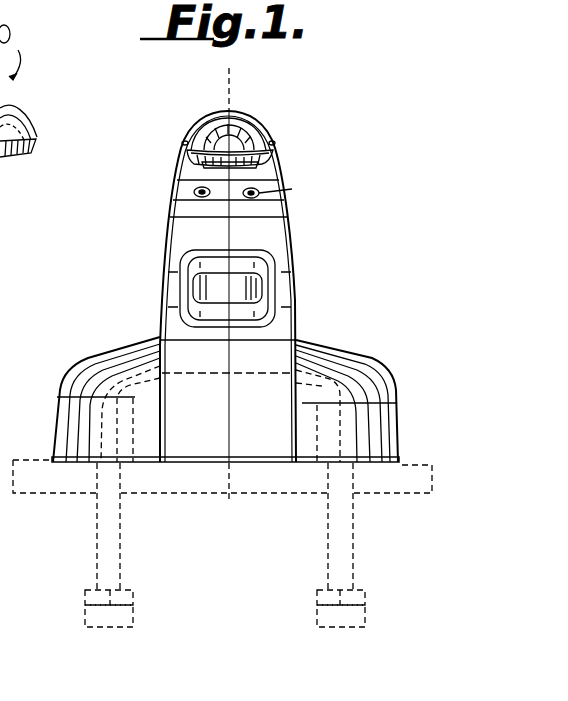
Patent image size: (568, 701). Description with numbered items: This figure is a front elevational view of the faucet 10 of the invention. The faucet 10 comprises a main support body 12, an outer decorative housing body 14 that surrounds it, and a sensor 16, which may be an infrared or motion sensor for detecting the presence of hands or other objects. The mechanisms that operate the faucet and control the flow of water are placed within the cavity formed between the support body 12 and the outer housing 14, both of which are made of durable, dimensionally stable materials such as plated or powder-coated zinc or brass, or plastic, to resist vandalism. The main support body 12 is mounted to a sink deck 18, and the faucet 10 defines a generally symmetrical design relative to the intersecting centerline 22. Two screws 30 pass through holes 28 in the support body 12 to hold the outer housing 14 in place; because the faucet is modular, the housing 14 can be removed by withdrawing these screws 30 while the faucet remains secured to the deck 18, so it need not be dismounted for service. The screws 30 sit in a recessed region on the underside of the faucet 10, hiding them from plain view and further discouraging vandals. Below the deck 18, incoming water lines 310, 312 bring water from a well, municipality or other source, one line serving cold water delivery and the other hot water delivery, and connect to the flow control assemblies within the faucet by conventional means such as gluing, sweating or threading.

The faucet 10 is at (308, 150).
The main support body 12 is at (292, 189).
The outer decorative housing body 14 is at (346, 382).
The sensor 16 is at (252, 289).
The sink deck 18 is at (152, 482).
The intersecting centerline 22 is at (233, 508).
The holes 28 is at (244, 194).
The screws 30 is at (222, 181).
The incoming water line 310 is at (110, 545).
The incoming water line 312 is at (338, 547).